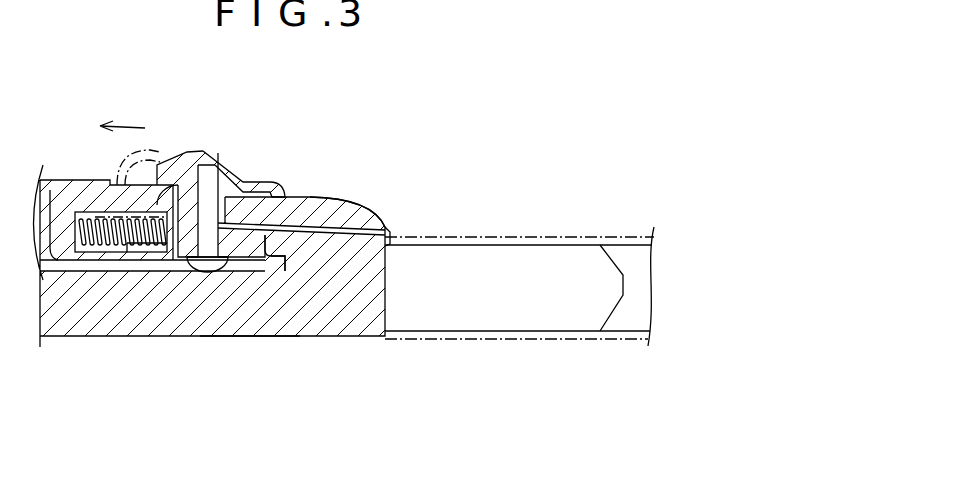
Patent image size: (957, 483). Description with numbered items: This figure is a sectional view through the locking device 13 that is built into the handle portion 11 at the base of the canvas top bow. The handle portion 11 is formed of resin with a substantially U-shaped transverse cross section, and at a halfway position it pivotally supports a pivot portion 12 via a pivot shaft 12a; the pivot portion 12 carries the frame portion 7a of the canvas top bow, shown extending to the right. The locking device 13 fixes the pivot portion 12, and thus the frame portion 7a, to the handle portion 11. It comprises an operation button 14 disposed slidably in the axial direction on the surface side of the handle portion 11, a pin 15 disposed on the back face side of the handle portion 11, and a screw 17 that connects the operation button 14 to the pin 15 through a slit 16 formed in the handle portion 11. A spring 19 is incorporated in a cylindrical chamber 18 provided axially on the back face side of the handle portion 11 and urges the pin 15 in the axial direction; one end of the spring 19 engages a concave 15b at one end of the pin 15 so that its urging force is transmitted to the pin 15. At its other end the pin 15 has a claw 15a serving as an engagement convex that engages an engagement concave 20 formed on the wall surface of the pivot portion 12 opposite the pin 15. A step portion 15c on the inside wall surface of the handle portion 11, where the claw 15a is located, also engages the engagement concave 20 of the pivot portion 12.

The frame portion 7a is at (627, 339).
The handle portion 11 is at (370, 213).
The pivot portion 12 is at (370, 327).
The pivot shaft 12a is at (238, 337).
The locking device 13 is at (299, 159).
The operation button 14 is at (232, 160).
The pin 15 is at (175, 258).
The claw 15a is at (270, 258).
The concave 15b is at (137, 252).
The step portion 15c is at (275, 237).
The slit 16 is at (180, 185).
The screw 17 is at (225, 272).
The cylindrical chamber 18 is at (78, 252).
The spring 19 is at (107, 246).
The engagement concave 20 is at (286, 266).